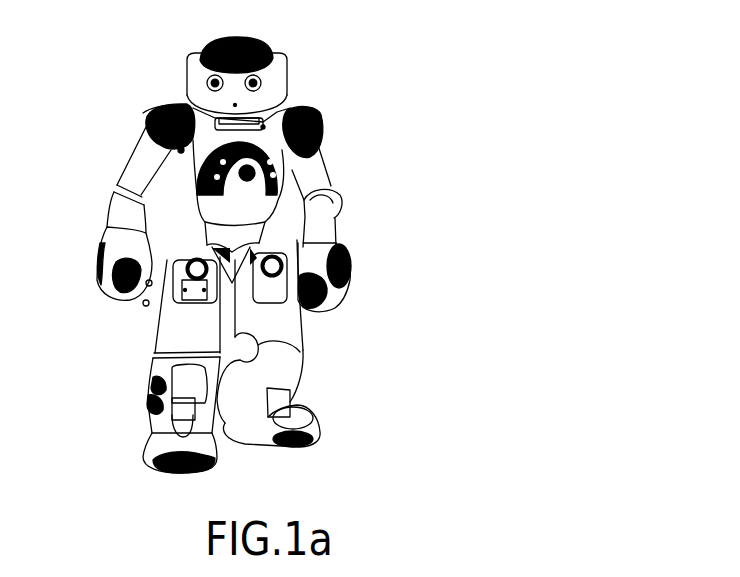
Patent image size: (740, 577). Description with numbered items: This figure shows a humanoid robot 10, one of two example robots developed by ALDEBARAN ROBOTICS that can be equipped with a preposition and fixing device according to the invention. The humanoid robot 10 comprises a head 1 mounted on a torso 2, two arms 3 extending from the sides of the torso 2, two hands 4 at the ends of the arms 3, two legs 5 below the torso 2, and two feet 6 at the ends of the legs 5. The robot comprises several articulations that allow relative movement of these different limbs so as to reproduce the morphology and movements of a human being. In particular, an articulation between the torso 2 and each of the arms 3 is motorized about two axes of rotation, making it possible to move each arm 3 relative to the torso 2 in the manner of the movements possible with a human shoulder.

The head 1 is at (125, 49).
The humanoid robot 10 is at (276, 80).
The torso 2 is at (277, 143).
The arms 3 is at (330, 218).
The hands 4 is at (343, 265).
The legs 5 is at (293, 327).
The feet 6 is at (312, 423).